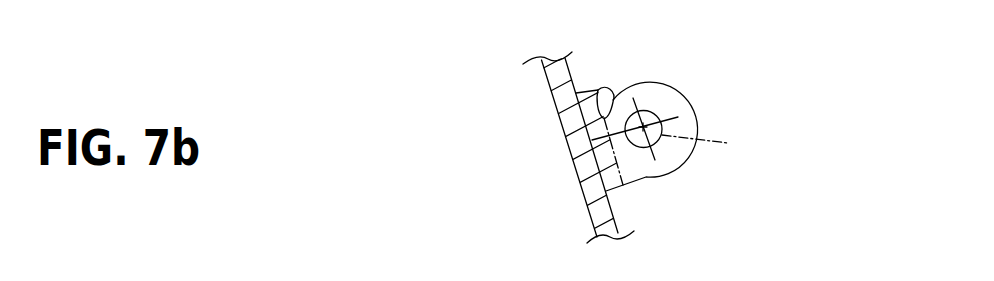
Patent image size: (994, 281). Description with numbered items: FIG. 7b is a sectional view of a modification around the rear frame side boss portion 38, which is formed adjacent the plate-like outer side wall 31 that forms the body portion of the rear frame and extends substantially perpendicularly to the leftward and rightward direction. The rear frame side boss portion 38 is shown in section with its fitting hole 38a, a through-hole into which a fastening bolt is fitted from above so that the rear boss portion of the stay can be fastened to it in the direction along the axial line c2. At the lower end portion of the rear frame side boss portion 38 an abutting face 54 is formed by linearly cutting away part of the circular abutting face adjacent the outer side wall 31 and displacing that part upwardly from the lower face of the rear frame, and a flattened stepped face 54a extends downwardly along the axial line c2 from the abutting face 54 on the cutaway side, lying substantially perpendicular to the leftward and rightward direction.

The outer side wall 31 is at (587, 210).
The abutting face 54 is at (667, 109).
The flattened stepped face 54a is at (612, 92).
The rear frame side boss portion 38 is at (729, 96).
The fitting hole 38a is at (646, 112).
The axial line c2 is at (711, 146).